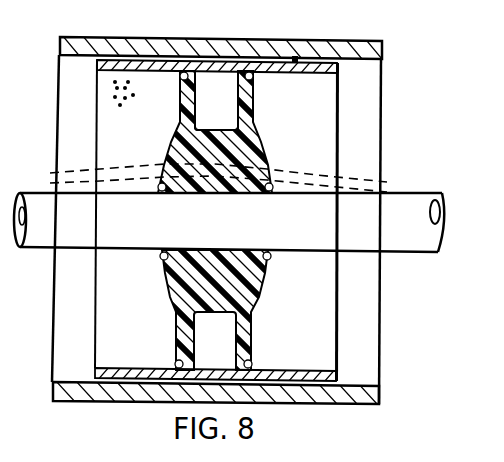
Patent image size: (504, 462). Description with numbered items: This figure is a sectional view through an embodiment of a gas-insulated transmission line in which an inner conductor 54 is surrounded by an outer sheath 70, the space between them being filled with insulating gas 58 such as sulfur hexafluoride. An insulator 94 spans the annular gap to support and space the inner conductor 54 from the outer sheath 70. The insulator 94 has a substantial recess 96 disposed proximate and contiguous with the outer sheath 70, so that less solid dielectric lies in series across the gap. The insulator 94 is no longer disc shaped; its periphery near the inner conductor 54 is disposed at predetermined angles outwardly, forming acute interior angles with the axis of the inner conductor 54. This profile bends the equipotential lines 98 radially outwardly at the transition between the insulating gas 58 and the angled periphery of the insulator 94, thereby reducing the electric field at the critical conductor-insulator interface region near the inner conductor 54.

The inner conductor 54 is at (412, 207).
The insulating gas 58 is at (113, 97).
The outer sheath 70 is at (314, 40).
The insulator 94 is at (236, 152).
The recess 96 is at (207, 103).
The equipotential lines 98 is at (137, 166).